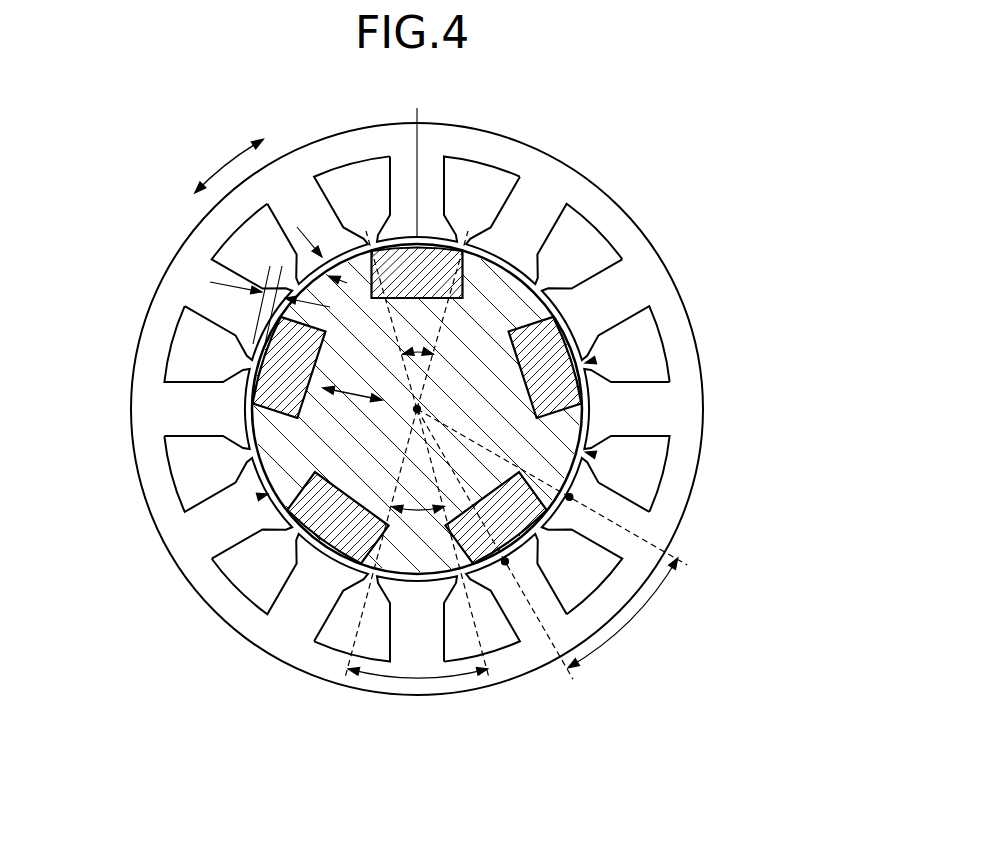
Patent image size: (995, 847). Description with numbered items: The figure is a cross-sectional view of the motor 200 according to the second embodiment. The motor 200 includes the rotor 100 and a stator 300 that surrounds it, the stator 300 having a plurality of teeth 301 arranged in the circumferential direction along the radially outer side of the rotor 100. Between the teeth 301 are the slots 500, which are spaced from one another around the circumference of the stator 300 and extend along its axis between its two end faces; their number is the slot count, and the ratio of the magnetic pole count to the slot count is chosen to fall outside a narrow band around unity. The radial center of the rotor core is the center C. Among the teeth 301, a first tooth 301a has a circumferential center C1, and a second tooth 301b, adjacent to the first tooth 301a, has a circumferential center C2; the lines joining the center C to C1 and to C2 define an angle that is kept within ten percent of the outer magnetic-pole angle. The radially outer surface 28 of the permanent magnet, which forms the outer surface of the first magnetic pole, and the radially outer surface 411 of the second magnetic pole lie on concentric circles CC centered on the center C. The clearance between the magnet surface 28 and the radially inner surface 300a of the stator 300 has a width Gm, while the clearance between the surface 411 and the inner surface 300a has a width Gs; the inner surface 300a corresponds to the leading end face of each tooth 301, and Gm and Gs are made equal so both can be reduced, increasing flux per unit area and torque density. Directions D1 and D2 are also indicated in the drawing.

The motor 200 is at (640, 107).
The slots 500 is at (576, 237).
The stator 300 is at (643, 228).
The teeth 301 is at (618, 297).
The first tooth 301a is at (523, 617).
The second tooth 301b is at (622, 518).
The radially outer surface of the permanent magnet 28 is at (590, 362).
The concentric circles CC is at (592, 408).
The radially outer surface of the second magnetic pole 411 is at (590, 453).
The circumferential center of the first tooth C1 is at (506, 566).
The circumferential center of the second tooth C2 is at (575, 497).
The rotor 100 is at (357, 460).
The radially inner surface of the stator 300a is at (262, 496).
The center C is at (414, 412).
The rotation direction D1 is at (229, 162).
The radial direction D2 is at (353, 394).
The width Gm is at (266, 302).
The width Gs is at (333, 250).